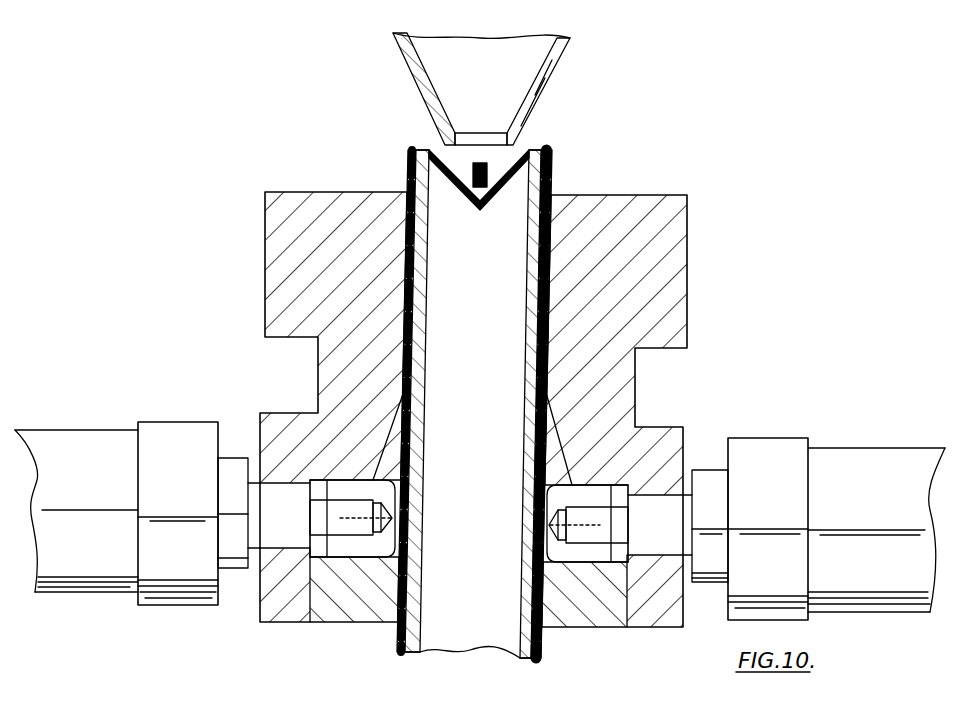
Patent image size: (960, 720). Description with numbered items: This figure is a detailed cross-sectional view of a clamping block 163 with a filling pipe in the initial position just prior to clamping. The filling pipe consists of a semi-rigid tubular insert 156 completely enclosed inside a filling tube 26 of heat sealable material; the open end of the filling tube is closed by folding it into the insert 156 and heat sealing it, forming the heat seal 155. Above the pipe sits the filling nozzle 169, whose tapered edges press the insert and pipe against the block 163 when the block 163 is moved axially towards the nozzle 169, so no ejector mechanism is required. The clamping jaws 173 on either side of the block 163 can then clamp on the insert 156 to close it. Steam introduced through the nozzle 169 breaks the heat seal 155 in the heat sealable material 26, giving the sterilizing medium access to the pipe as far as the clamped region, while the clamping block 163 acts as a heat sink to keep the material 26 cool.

The filling tube 26 is at (510, 168).
The heat seal 155 is at (410, 184).
The semi-rigid tubular insert 156 is at (534, 270).
The clamping block 163 is at (285, 212).
The filling nozzle 169 is at (413, 83).
The clamping jaws 173 is at (577, 497).